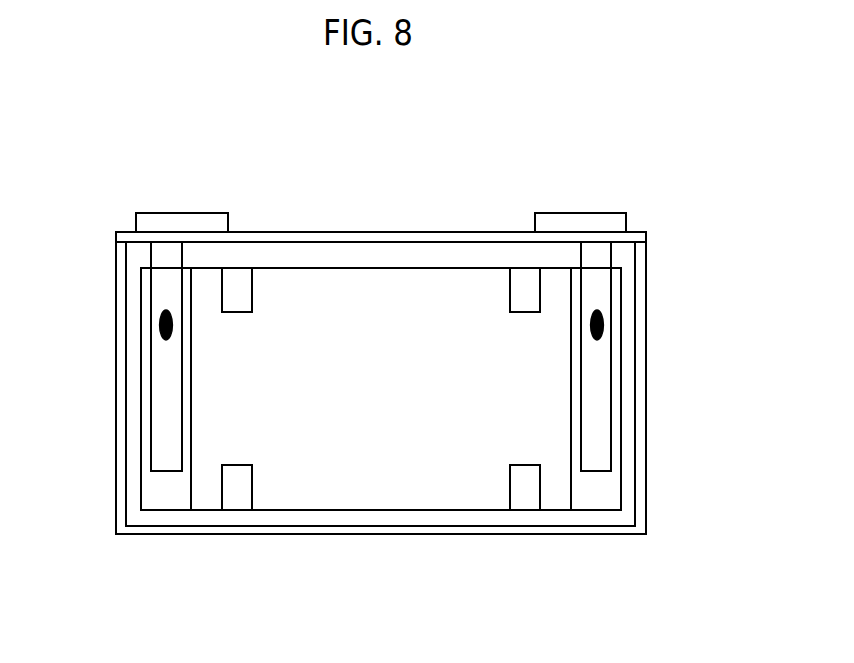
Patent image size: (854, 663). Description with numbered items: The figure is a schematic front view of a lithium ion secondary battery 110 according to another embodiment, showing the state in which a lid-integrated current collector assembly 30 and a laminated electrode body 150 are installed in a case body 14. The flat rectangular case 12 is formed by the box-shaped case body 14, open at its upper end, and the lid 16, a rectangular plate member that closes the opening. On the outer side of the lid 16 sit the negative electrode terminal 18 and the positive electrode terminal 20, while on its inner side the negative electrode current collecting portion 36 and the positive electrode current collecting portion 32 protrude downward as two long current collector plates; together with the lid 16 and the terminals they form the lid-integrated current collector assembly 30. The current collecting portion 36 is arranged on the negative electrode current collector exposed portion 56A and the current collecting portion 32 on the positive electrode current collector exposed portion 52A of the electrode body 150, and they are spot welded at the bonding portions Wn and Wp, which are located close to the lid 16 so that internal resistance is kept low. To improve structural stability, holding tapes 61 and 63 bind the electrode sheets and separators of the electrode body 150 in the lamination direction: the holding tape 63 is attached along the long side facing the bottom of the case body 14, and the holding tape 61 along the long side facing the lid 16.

The lithium ion secondary battery 110 is at (652, 140).
The rectangular case 12 is at (647, 413).
The case body 14 is at (647, 485).
The lid 16 is at (373, 232).
The lid-integrated current collector assembly 30 is at (381, 202).
The negative electrode terminal 18 is at (180, 212).
The positive electrode terminal 20 is at (595, 212).
The negative electrode current collecting portion 36 is at (156, 375).
The positive electrode current collecting portion 32 is at (602, 377).
The negative electrode bonding portion Wn is at (160, 322).
The positive electrode bonding portion Wp is at (603, 322).
The negative electrode current collector exposed portion 56A is at (166, 503).
The positive electrode current collector exposed portion 52A is at (595, 503).
The laminated electrode body 150 is at (425, 512).
The holding tape 61 is at (237, 275).
The holding tape 63 is at (237, 503).